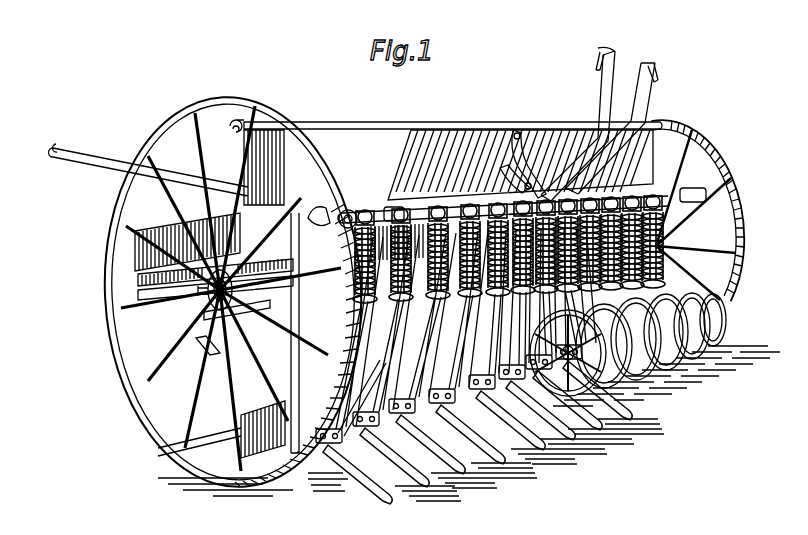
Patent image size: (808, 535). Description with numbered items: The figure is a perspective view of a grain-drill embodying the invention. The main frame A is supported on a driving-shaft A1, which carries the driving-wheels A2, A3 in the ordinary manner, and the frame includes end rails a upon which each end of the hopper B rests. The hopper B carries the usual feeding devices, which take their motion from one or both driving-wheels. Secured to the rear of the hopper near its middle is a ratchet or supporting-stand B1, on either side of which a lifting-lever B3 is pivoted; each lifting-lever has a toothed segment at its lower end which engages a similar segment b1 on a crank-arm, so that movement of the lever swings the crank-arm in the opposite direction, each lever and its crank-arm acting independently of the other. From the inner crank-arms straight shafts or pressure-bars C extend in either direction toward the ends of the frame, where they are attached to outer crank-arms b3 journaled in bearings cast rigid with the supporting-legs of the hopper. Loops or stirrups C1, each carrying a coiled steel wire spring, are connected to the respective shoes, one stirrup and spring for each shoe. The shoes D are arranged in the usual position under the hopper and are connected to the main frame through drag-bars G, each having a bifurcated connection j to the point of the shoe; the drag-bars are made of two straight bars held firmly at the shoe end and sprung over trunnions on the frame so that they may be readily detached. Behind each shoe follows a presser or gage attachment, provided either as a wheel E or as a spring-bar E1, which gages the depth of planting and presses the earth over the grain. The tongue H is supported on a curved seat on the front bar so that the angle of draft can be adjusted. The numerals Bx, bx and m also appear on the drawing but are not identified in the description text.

The main frame A is at (220, 292).
The driving-shaft A1 is at (196, 312).
The driving-wheel A2 is at (135, 372).
The driving-wheel A3 is at (736, 232).
The end rail a is at (166, 225).
The drag-bar G is at (198, 284).
The tongue H is at (109, 158).
The bifurcated connection j is at (190, 336).
The shoe D is at (228, 403).
The hopper B is at (384, 114).
The ratchet or supporting-stand B1 is at (527, 162).
The handle Bx is at (591, 96).
The lifting-lever B3 is at (630, 102).
The bracket arm bx is at (498, 158).
The segment of gear-teeth b1 is at (314, 211).
The outer crank-arm b3 is at (352, 200).
The pressure-bar C is at (413, 198).
The stirrup C1 is at (388, 201).
The brace rod m is at (374, 383).
The wheel E is at (762, 302).
The spring-bar E1 is at (354, 466).